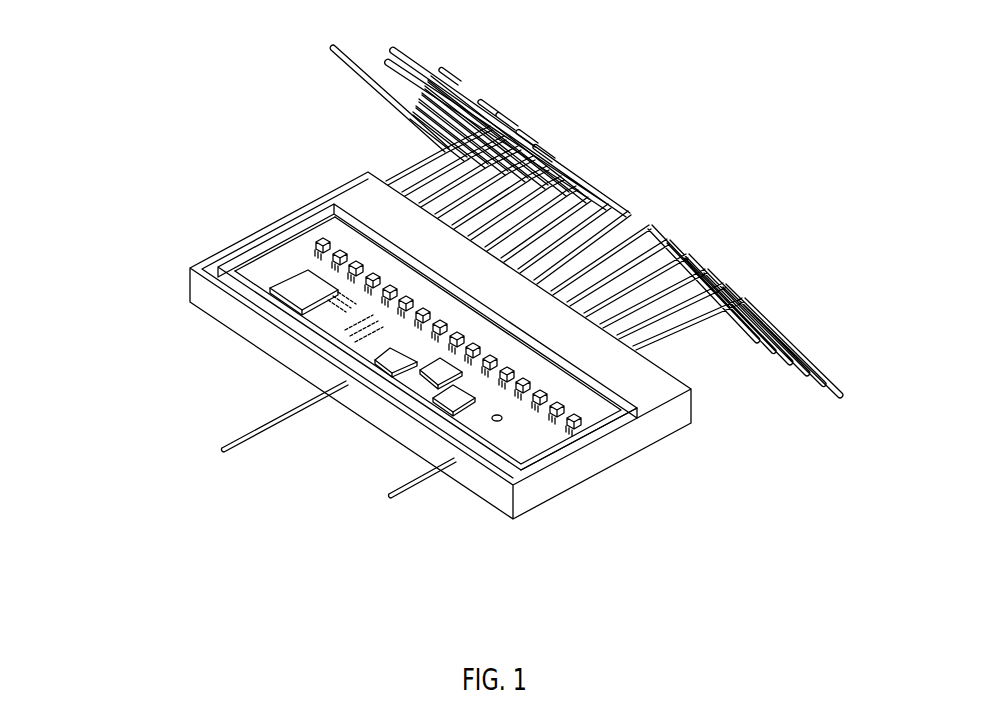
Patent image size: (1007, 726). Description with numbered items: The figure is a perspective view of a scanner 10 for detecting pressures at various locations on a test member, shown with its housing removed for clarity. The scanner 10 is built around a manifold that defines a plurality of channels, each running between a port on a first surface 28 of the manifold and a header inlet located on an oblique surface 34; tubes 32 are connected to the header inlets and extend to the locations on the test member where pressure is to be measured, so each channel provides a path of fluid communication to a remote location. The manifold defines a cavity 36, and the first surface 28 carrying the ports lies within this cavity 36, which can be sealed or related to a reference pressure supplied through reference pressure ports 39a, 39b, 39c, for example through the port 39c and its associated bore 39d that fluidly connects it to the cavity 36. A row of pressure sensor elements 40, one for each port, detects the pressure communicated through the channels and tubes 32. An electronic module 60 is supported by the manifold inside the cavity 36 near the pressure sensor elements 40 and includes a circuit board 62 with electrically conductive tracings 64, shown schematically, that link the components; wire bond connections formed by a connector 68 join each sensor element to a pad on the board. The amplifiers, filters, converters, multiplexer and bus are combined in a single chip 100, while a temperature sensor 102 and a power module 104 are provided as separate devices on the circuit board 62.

The scanner 10 is at (254, 128).
The first surface 28 is at (573, 432).
The tubes 32 is at (537, 145).
The surface 34 is at (392, 170).
The cavity 36 is at (277, 255).
The reference pressure port 39a is at (348, 72).
The reference pressure port 39b is at (242, 442).
The reference pressure port 39c is at (407, 493).
The bore 39d is at (498, 423).
The pressure sensor elements 40 is at (370, 258).
The electronic module 60 is at (521, 430).
The circuit board 62 is at (490, 436).
The electrically conductive tracings 64 is at (343, 333).
The connector 68 is at (302, 245).
The chip 100 is at (298, 288).
The temperature sensor 102 is at (438, 370).
The power module 104 is at (392, 362).